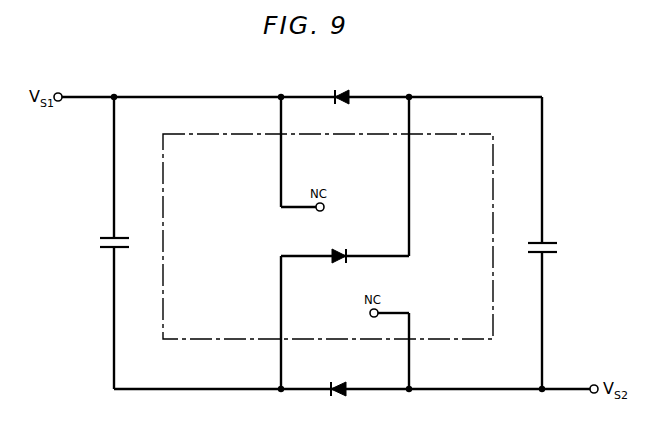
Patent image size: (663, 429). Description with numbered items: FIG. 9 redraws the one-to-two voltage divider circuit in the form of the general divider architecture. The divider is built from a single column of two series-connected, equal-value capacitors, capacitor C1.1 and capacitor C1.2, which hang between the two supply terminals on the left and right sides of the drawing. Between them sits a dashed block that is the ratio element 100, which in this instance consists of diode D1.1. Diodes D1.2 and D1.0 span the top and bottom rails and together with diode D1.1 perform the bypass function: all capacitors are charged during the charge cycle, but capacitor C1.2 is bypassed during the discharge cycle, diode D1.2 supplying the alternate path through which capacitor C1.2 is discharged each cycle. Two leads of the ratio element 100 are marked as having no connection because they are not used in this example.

The ratio element 100 is at (328, 236).
The diode D1.2 is at (344, 90).
The diode D1.1 is at (345, 249).
The diode D1.0 is at (341, 381).
The capacitor C1.1 is at (101, 246).
The capacitor C1.2 is at (558, 251).